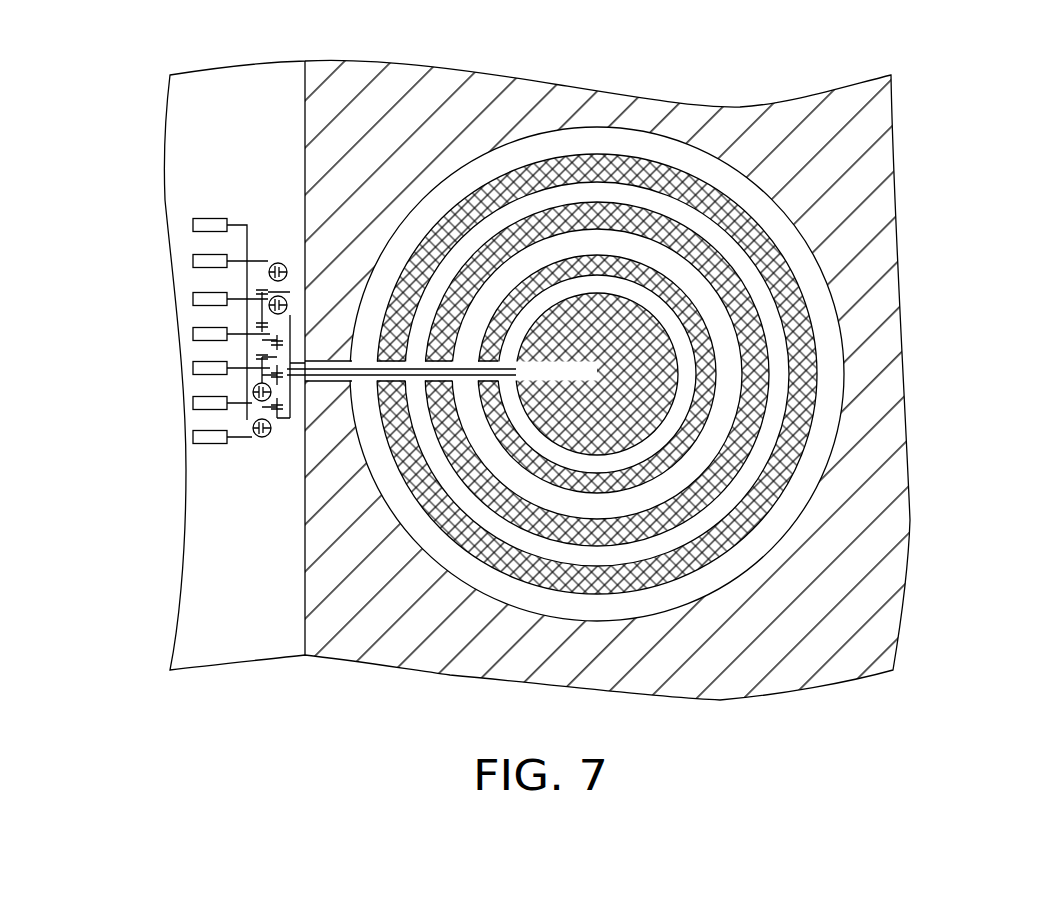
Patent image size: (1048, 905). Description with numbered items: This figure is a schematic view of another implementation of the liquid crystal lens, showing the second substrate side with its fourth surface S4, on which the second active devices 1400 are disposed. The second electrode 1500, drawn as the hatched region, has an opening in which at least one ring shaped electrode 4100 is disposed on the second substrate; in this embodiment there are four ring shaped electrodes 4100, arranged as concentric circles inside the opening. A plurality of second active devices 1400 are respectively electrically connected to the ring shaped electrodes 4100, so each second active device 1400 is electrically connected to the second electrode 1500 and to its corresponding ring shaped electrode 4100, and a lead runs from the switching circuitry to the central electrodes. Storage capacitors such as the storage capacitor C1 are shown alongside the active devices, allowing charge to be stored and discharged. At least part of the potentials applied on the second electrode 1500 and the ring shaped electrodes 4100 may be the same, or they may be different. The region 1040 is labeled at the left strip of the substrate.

The peripheral circuit region 1040 is at (182, 121).
The fourth surface S4 is at (251, 87).
The storage capacitor C1 is at (270, 268).
The second active device 1400 is at (254, 392).
The ring shaped electrode 4100 is at (797, 332).
The second electrode 1500 is at (878, 522).